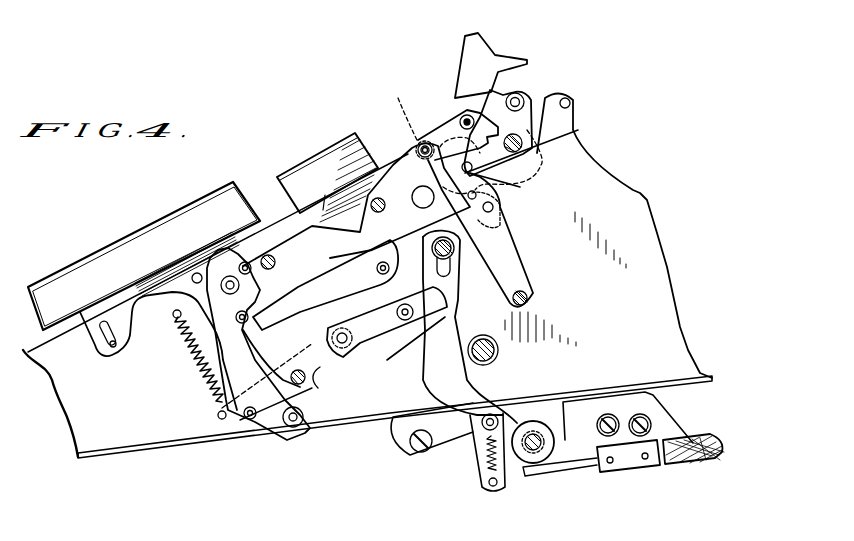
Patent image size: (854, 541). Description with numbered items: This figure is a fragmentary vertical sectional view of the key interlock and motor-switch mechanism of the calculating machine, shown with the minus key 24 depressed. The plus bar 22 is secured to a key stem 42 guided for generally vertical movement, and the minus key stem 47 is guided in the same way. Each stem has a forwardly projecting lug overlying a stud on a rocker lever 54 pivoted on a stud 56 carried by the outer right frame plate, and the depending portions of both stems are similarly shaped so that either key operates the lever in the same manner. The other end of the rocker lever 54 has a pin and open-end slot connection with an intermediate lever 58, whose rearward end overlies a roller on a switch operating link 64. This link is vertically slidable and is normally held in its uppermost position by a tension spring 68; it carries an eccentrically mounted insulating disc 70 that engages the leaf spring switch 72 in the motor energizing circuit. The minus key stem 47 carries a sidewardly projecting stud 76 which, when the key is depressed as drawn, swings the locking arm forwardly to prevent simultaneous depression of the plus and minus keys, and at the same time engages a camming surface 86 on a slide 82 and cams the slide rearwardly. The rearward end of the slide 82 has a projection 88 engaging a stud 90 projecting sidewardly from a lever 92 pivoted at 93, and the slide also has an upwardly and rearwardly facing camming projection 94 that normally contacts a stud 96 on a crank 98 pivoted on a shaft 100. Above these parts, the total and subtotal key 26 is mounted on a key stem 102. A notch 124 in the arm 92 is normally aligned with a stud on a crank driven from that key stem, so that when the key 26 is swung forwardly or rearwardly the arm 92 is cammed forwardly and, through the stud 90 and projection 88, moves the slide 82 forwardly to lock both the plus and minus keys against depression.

The plus bar 22 is at (208, 207).
The minus key 24 is at (350, 147).
The total and subtotal key 26 is at (490, 50).
The key stem 42 is at (145, 300).
The minus key stem 47 is at (323, 208).
The rocker lever 54 is at (323, 368).
The stud 56 is at (318, 388).
The intermediate lever 58 is at (366, 343).
The switch operating link 64 is at (465, 396).
The tension spring 68 is at (485, 463).
The insulating disc 70 is at (545, 420).
The leaf spring switch 72 is at (525, 470).
The stud 76 is at (246, 265).
The slide 82 is at (347, 262).
The camming surface 86 is at (250, 260).
The projection 88 is at (493, 223).
The stud 90 is at (578, 130).
The lever 92 is at (508, 259).
The pivot 93 is at (530, 297).
The camming projection 94 is at (412, 156).
The stud 96 is at (404, 110).
The crank 98 is at (455, 130).
The shaft 100 is at (463, 118).
The key stem 102 is at (500, 82).
The notch 124 is at (499, 163).